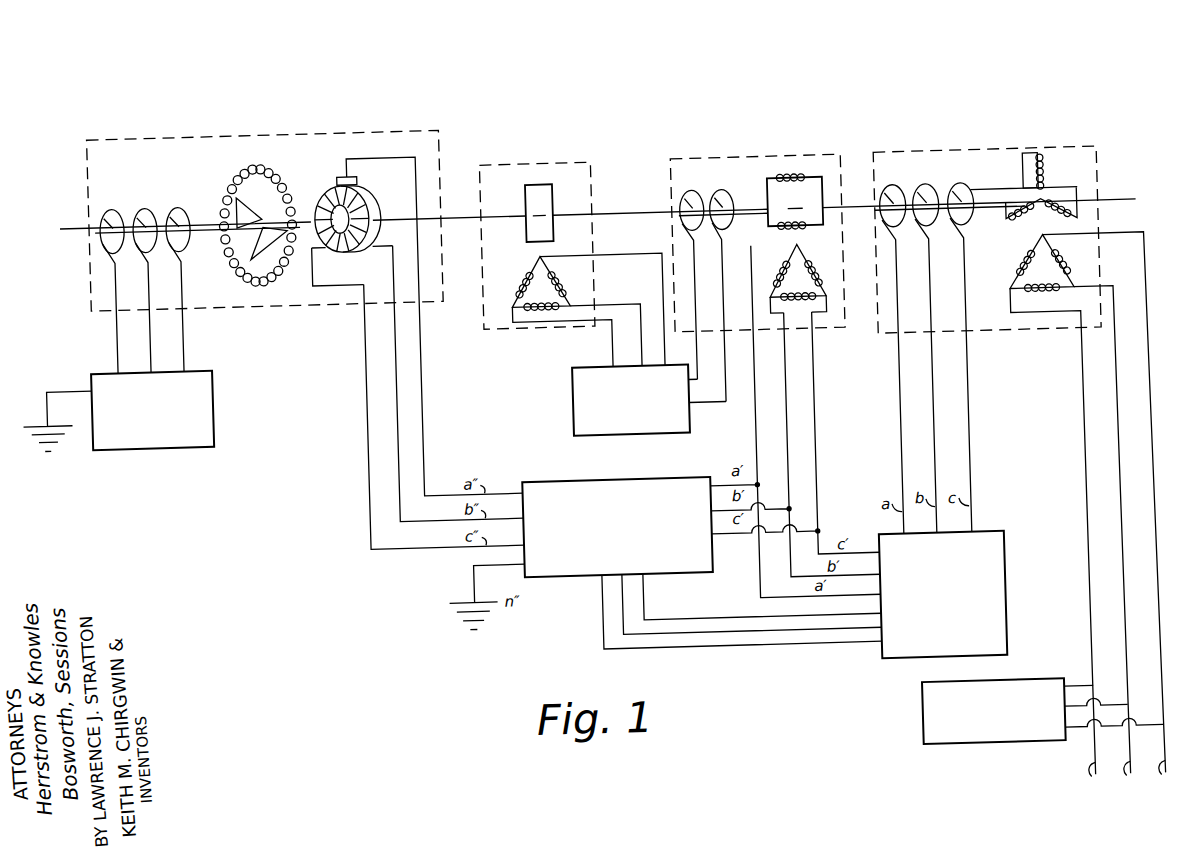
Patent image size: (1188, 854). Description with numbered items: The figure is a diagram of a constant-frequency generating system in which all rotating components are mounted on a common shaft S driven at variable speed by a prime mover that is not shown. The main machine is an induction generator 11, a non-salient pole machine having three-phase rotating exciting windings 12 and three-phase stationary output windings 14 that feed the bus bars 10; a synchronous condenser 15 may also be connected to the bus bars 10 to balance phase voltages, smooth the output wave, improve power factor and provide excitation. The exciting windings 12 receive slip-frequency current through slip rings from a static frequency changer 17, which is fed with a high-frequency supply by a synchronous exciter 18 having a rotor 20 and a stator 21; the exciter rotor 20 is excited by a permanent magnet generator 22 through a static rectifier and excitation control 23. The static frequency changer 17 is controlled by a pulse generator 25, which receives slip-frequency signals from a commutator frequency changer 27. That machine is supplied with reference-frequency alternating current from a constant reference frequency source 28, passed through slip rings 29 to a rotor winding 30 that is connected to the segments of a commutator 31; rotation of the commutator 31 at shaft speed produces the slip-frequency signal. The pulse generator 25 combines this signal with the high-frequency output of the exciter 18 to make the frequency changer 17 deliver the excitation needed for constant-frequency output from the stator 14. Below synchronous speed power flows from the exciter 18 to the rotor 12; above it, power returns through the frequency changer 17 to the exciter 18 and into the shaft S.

The bus bars 10 is at (1088, 518).
The induction generator 11 is at (972, 168).
The exciting windings 12 is at (1046, 182).
The output windings 14 is at (1076, 277).
The synchronous condenser 15 is at (1020, 692).
The static frequency changer 17 is at (998, 574).
The synchronous exciter 18 is at (768, 169).
The rotor 20 is at (826, 183).
The stator 21 is at (822, 278).
The permanent magnet generator 22 is at (543, 169).
The excitation control 23 is at (573, 388).
The pulse generator 25 is at (578, 480).
The commutator frequency changer 27 is at (322, 131).
The constant reference frequency source 28 is at (212, 401).
The slip rings 29 is at (160, 198).
The rotor winding 30 is at (250, 160).
The commutator 31 is at (376, 184).
The shaft S is at (70, 214).